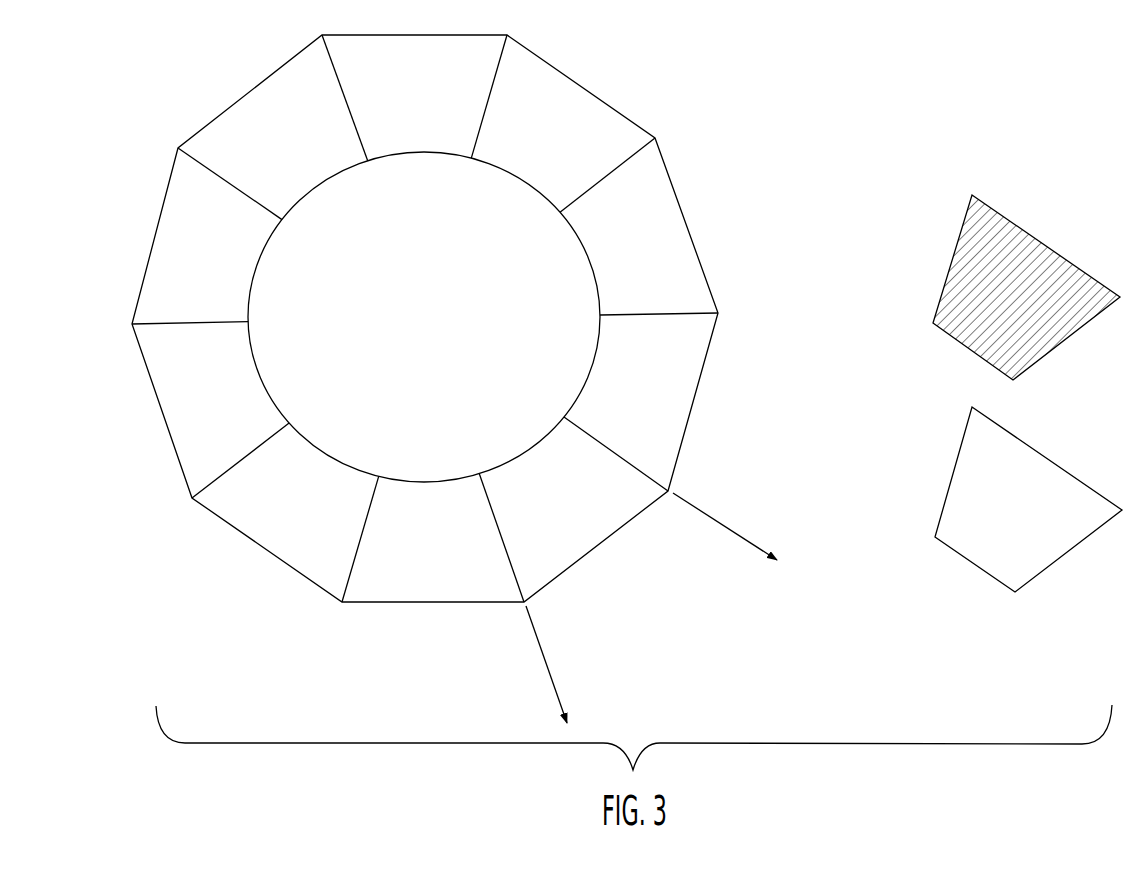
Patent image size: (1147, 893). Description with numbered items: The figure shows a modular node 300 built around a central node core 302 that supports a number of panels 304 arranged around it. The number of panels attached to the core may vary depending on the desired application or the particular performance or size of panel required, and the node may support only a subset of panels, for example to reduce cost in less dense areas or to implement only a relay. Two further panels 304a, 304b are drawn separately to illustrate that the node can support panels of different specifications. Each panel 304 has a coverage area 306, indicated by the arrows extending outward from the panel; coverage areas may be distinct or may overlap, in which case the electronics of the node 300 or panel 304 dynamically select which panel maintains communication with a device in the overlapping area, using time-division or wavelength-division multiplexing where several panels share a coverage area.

The modular node 300 is at (578, 68).
The node core 302 is at (487, 330).
The panel 304 is at (458, 111).
The panel 304a is at (1057, 520).
The panel 304b is at (1055, 305).
The coverage area 306 is at (727, 527).